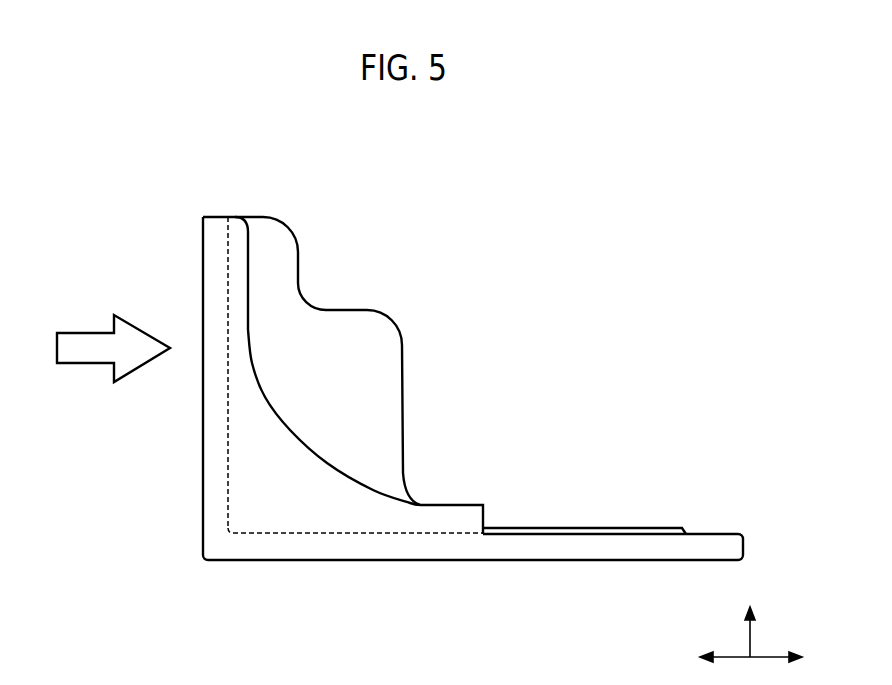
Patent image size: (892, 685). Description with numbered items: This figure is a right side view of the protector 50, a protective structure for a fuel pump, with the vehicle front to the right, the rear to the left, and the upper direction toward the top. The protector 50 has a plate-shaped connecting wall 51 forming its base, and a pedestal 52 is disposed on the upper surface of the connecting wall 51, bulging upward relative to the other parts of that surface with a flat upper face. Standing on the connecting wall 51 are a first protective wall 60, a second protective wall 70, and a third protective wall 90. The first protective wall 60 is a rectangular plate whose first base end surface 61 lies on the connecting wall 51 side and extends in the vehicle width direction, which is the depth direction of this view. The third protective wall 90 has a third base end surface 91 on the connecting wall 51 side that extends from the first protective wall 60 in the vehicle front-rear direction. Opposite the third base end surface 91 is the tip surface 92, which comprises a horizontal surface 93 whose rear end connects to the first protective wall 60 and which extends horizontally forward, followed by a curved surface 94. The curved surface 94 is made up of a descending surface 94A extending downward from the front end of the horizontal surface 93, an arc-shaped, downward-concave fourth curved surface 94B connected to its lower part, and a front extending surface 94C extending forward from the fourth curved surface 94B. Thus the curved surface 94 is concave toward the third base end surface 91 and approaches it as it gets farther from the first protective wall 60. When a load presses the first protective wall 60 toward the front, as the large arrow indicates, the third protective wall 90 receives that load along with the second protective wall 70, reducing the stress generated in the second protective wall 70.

The protector 50 is at (585, 272).
The connecting wall 51 is at (723, 535).
The pedestal 52 is at (662, 528).
The first protective wall 60 is at (203, 256).
The first base end surface 61 is at (228, 533).
The second protective wall 70 is at (393, 370).
The third protective wall 90 is at (237, 293).
The third base end surface 91 is at (375, 535).
The tip surface 92 is at (349, 334).
The horizontal surface 93 is at (233, 217).
The curved surface 94 is at (250, 267).
The descending surface 94A is at (250, 316).
The fourth curved surface 94B is at (295, 438).
The front extending surface 94C is at (448, 505).